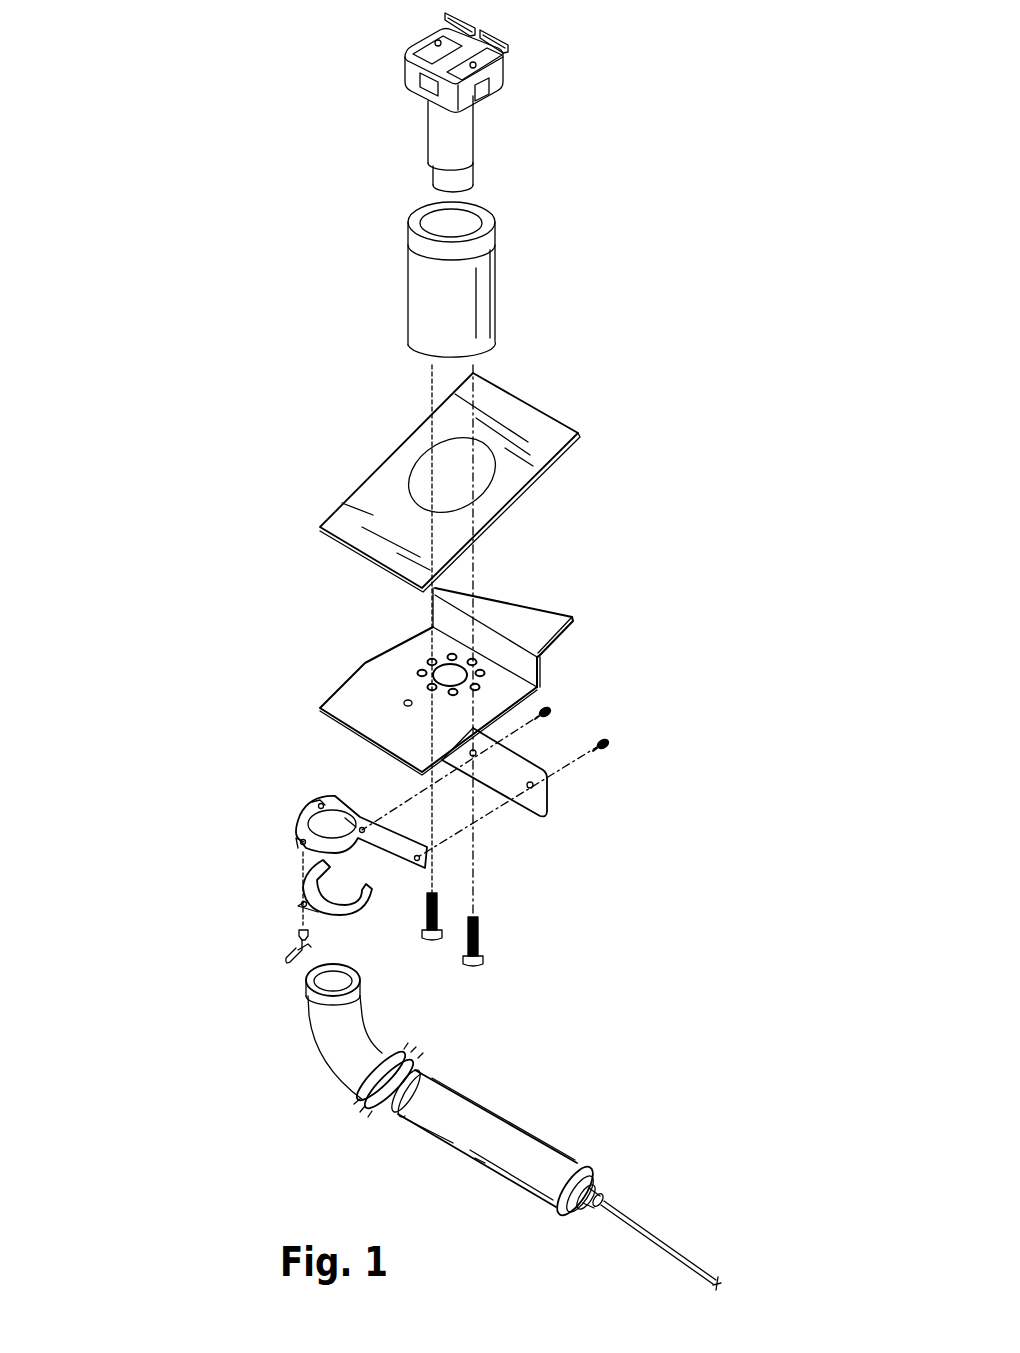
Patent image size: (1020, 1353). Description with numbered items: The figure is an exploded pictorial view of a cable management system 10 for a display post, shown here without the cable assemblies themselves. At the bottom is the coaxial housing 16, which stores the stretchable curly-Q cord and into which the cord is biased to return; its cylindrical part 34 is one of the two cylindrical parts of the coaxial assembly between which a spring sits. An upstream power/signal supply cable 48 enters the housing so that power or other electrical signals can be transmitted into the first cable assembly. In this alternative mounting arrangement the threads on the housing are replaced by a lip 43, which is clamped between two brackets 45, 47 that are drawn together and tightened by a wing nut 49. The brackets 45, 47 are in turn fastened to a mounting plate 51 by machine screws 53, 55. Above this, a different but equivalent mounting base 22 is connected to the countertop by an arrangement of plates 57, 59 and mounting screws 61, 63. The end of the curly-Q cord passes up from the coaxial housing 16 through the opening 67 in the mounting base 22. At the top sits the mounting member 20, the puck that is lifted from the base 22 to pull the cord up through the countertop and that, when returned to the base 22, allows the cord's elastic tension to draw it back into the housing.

The cable management system 10 is at (233, 414).
The coaxial housing 16 is at (540, 1164).
The mounting member 20 is at (538, 110).
The mounting base 22 is at (516, 260).
The cylindrical part 34 is at (430, 1103).
The lip 43 is at (307, 990).
The bracket 45 is at (300, 812).
The bracket 47 is at (297, 882).
The power/signal supply cable 48 is at (680, 1247).
The wing nut 49 is at (296, 949).
The mounting plate 51 is at (500, 778).
The machine screw 53 is at (549, 708).
The machine screw 55 is at (612, 742).
The plate 57 is at (537, 417).
The plate 59 is at (527, 592).
The mounting screw 61 is at (427, 940).
The mounting screw 63 is at (483, 967).
The opening 67 is at (468, 230).